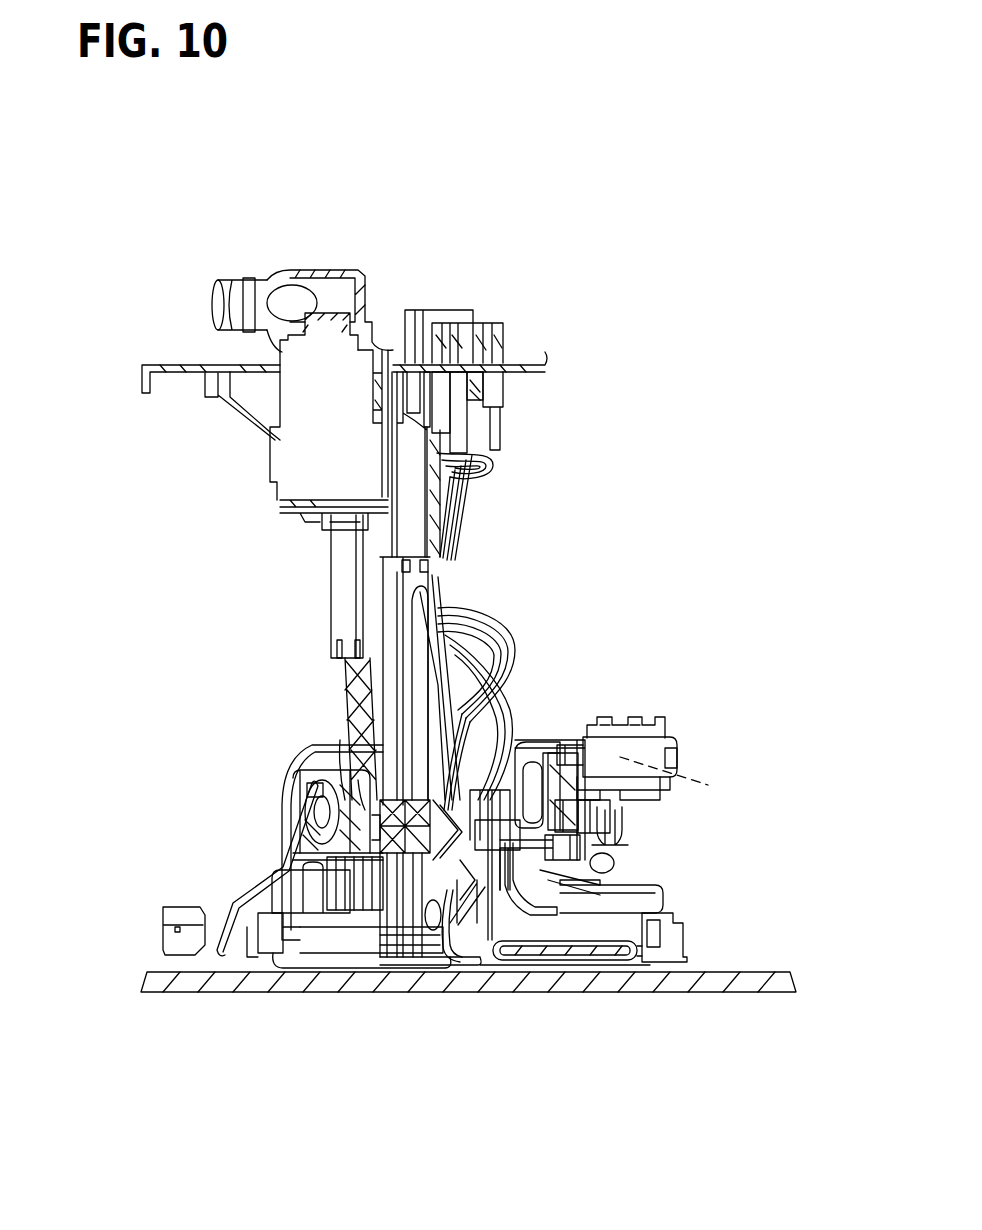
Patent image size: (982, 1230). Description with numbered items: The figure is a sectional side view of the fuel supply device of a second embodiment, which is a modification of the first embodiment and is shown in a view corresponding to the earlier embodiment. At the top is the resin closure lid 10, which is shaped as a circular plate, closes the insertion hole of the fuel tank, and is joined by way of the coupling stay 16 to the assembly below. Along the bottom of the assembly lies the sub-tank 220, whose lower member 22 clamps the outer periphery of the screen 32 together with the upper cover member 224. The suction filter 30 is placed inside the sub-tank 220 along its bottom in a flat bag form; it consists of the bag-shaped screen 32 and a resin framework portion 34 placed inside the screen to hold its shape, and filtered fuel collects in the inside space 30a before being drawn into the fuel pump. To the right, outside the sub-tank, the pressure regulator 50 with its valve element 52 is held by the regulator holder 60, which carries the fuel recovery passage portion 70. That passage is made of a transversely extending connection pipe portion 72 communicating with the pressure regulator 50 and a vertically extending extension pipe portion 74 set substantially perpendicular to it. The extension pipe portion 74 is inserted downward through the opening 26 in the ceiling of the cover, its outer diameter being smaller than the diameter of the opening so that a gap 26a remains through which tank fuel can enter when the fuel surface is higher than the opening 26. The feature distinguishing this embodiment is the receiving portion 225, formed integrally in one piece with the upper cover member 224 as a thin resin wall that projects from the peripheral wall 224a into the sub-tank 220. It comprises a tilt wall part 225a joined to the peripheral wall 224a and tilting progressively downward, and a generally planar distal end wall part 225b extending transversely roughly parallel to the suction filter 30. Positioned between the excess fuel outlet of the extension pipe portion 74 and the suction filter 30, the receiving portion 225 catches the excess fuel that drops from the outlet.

The closure lid 10 is at (344, 415).
The coupling stay 16 is at (331, 566).
The lower member 22 is at (684, 958).
The opening 26 is at (553, 813).
The gap 26a is at (550, 819).
The suction filter 30 is at (565, 1005).
The inside space 30a is at (641, 962).
The screen 32 is at (617, 955).
The framework portion 34 is at (581, 958).
The pressure regulator 50 is at (680, 761).
The valve element 52 is at (680, 778).
The regulator holder 60 is at (667, 713).
The fuel recovery passage portion 70 is at (555, 736).
The connection pipe portion 72 is at (557, 793).
The extension pipe portion 74 is at (533, 773).
The sub-tank 220 is at (270, 890).
The upper cover member 224 is at (630, 850).
The peripheral wall 224a is at (453, 950).
The receiving portion 225 is at (651, 879).
The tilt wall part 225a is at (580, 883).
The distal end wall part 225b is at (583, 900).